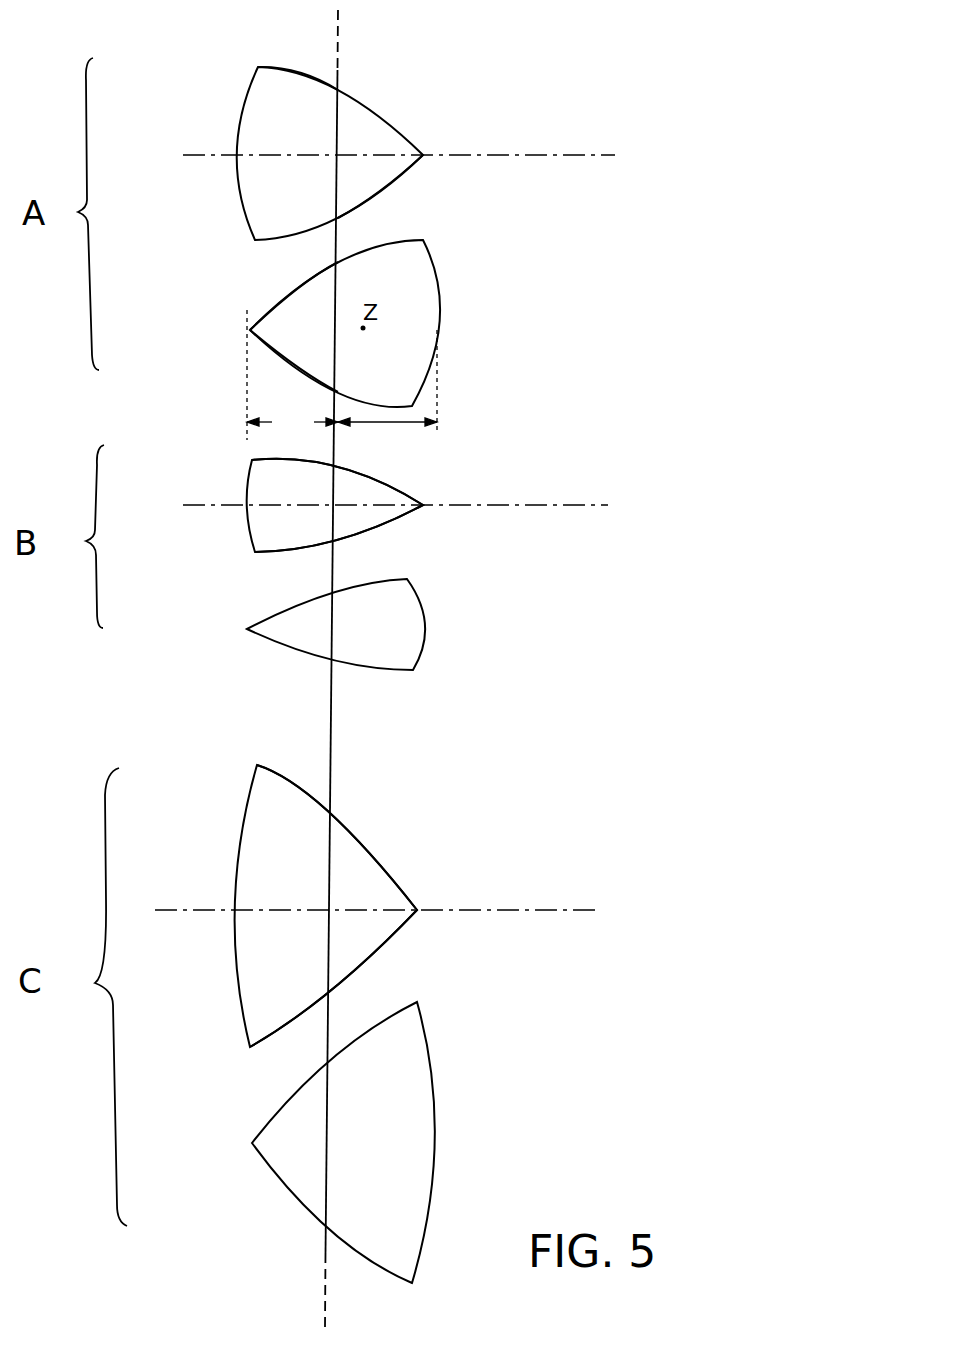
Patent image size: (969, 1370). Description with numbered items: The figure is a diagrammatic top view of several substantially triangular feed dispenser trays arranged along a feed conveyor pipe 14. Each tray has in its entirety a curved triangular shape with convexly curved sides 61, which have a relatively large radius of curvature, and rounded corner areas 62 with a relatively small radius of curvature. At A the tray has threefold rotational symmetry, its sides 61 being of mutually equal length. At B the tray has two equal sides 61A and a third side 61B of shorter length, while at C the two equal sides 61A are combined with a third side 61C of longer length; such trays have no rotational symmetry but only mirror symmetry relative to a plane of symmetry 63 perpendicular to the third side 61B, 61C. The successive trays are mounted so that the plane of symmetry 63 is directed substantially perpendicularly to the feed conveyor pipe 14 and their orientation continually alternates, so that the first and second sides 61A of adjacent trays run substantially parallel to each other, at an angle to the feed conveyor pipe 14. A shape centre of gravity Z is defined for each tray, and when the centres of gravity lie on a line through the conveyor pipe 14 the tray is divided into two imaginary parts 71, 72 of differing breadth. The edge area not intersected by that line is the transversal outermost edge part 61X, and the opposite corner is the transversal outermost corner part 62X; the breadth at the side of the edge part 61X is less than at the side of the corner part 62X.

The feed conveyor pipe 14 is at (338, 236).
The side 61 is at (374, 105).
The corner area 62 is at (258, 67).
The plane of symmetry 63 is at (545, 155).
The transversal outermost edge part 61X is at (440, 328).
The transversal outermost corner part 62X is at (250, 330).
The imaginary part 71 is at (394, 416).
The imaginary part 72 is at (292, 375).
The first and second sides 61A is at (365, 470).
The third side of shorter length 61B is at (247, 525).
The third side of longer length 61C is at (235, 975).